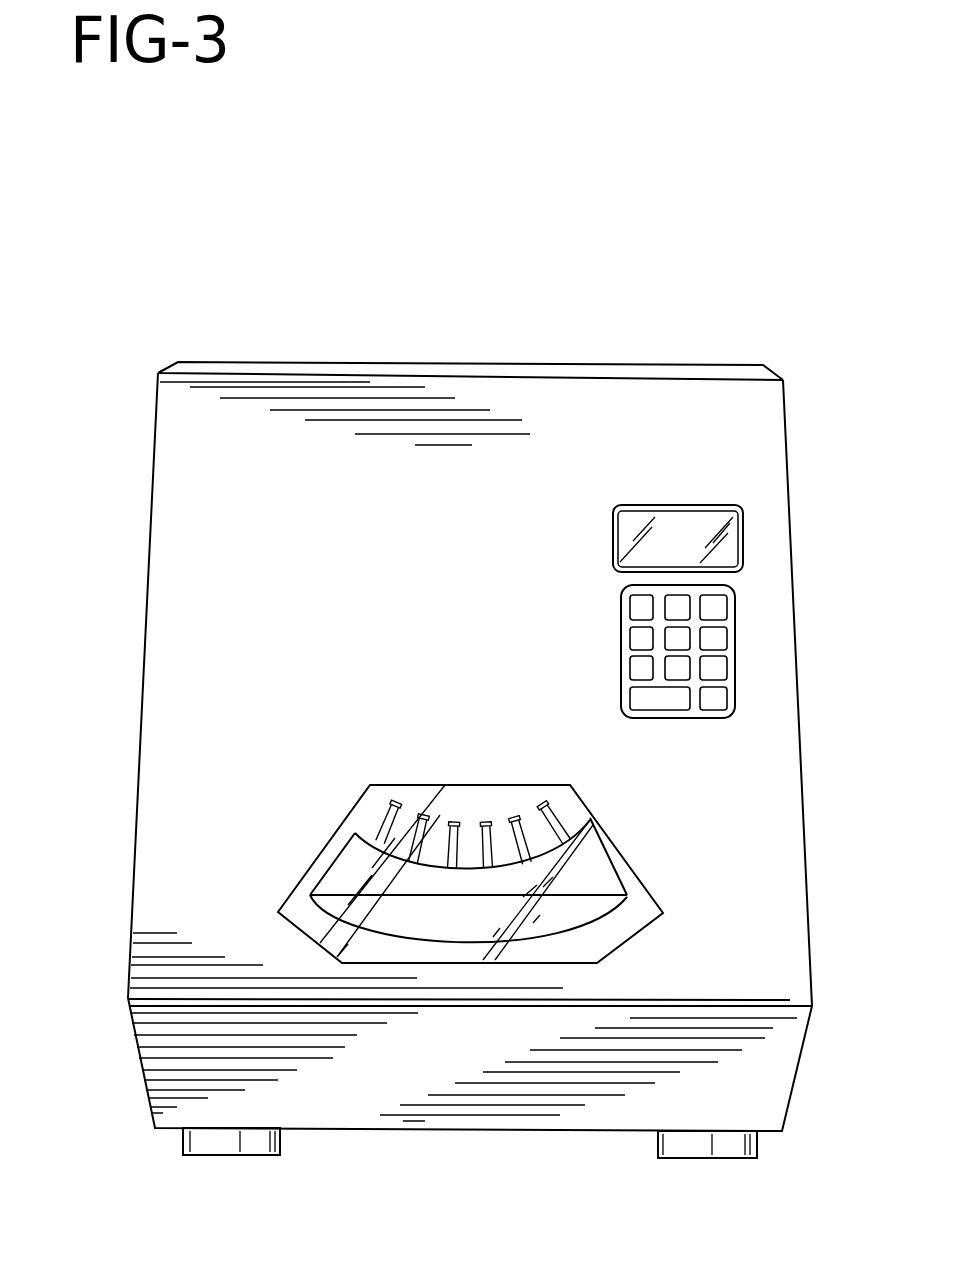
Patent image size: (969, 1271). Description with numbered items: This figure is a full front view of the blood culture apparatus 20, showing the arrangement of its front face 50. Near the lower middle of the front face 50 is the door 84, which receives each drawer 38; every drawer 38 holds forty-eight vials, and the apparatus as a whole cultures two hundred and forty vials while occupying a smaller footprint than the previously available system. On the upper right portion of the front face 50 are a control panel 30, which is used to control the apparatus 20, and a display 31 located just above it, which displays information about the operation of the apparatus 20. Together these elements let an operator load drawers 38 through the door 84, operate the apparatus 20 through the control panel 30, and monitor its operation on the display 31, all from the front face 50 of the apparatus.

The blood culture apparatus 20 is at (338, 373).
The front face 50 is at (295, 512).
The display 31 is at (730, 520).
The control panel 30 is at (730, 645).
The door 84 is at (403, 860).
The drawer 38 is at (316, 940).